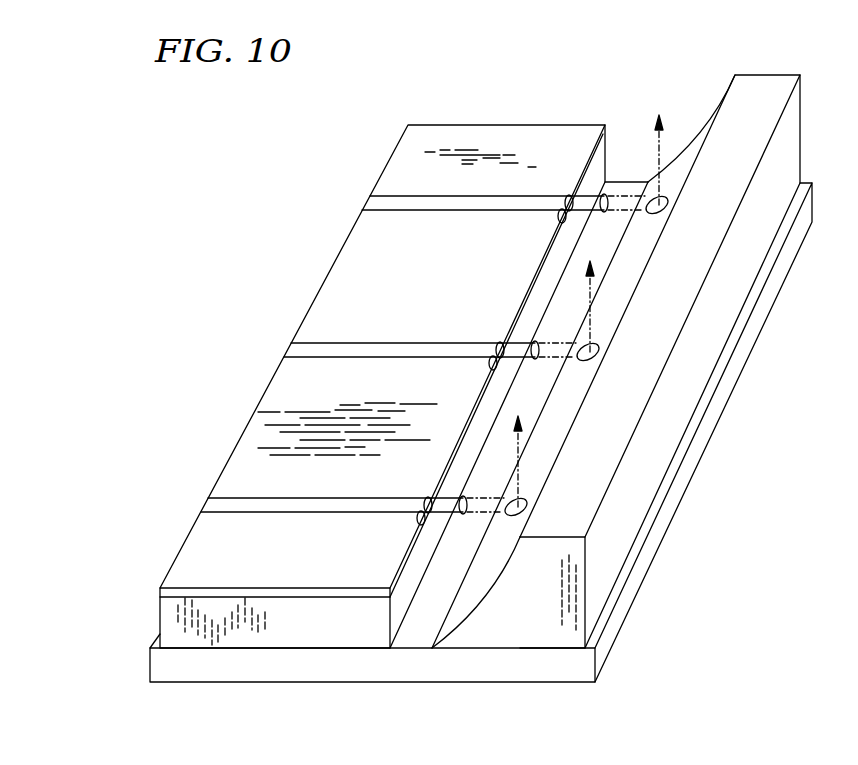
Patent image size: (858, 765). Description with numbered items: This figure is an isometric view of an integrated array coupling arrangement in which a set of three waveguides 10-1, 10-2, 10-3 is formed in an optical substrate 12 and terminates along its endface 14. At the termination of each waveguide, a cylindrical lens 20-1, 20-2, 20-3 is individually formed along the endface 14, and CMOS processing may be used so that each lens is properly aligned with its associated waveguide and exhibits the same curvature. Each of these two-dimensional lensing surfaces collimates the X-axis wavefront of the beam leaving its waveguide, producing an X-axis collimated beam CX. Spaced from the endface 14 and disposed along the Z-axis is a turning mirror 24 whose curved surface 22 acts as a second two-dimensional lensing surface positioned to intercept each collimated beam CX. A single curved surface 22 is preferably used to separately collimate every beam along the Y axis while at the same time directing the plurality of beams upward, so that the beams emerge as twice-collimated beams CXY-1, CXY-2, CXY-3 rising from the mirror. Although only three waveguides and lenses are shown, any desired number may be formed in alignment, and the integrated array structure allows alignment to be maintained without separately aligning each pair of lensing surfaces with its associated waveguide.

The waveguide 10-1 is at (208, 500).
The waveguide 10-2 is at (290, 345).
The waveguide 10-3 is at (368, 199).
The optical substrate 12 is at (172, 612).
The endface 14 is at (603, 165).
The cylindrical lens 20-1 is at (420, 518).
The cylindrical lens 20-2 is at (492, 365).
The cylindrical lens 20-3 is at (560, 216).
The curved surface 22 is at (688, 147).
The turning mirror 24 is at (790, 140).
The X-axis collimated beam CX is at (605, 213).
The twice-collimated beam CXY-1 is at (528, 507).
The twice-collimated beam CXY-2 is at (600, 352).
The twice-collimated beam CXY-3 is at (669, 205).